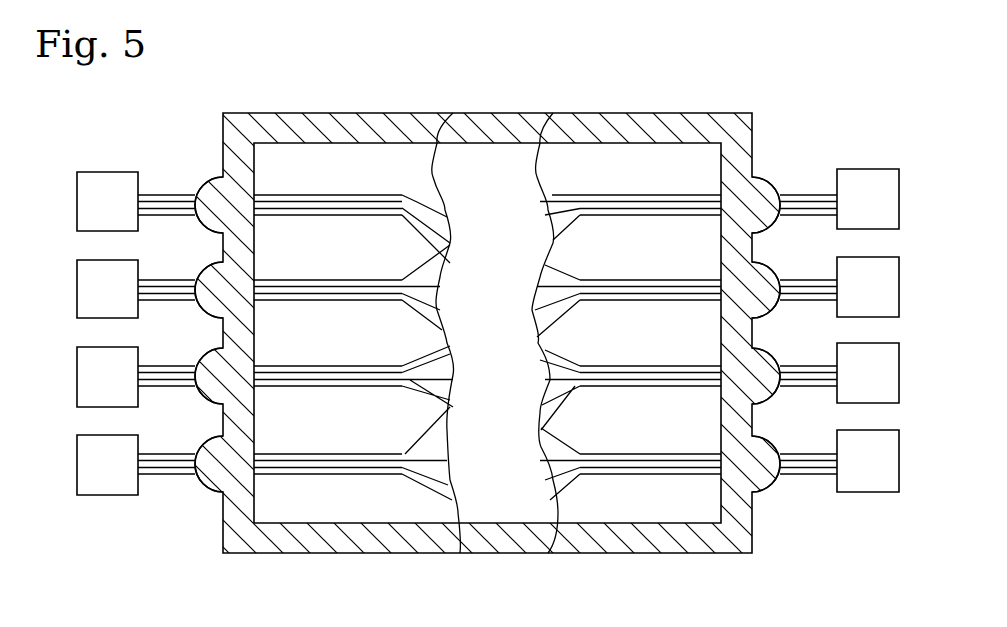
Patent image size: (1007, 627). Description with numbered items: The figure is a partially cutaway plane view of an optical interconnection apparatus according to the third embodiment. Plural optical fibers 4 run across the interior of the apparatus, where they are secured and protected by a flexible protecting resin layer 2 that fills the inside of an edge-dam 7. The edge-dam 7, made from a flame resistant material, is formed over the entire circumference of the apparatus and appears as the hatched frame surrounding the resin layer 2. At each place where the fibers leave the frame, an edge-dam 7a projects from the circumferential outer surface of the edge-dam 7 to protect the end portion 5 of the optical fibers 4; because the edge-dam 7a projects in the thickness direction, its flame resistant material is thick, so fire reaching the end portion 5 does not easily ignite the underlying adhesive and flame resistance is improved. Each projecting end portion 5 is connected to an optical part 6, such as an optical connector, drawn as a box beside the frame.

The flexible protecting resin layer 2 is at (608, 508).
The optical fibers 4 is at (327, 195).
The end portion 5 is at (152, 195).
The optical part 6 is at (105, 182).
The edge-dam 7 is at (683, 133).
The edge-dam 7a is at (207, 180).